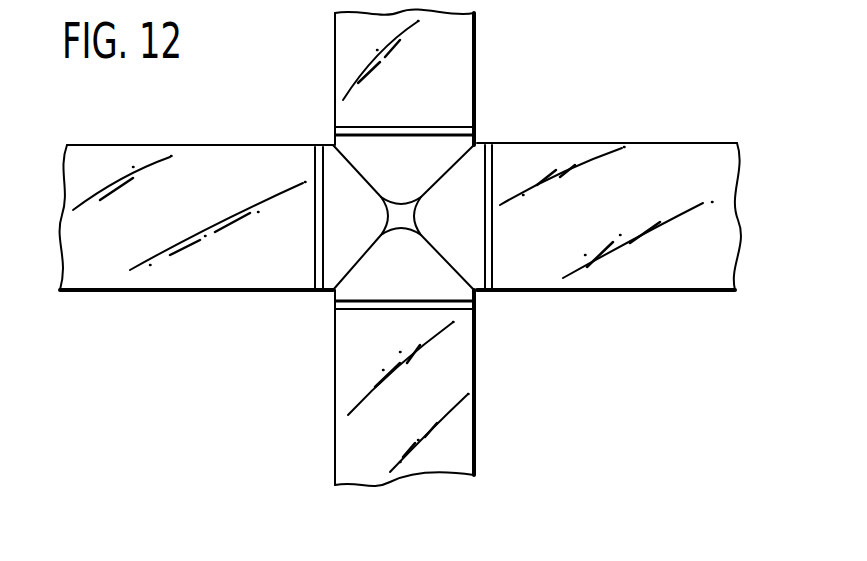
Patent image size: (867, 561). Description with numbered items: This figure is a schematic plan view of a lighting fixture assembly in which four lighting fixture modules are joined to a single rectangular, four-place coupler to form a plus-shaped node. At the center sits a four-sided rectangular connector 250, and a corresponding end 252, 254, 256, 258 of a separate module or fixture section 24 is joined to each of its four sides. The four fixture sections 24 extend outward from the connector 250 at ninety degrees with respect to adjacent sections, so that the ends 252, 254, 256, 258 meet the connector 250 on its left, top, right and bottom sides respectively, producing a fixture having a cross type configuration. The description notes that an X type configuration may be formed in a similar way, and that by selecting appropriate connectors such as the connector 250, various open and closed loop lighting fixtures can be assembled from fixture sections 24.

The fixture section 24 is at (130, 250).
The four-sided rectangular connector 250 is at (375, 270).
The end 252 is at (312, 172).
The end 254 is at (433, 128).
The end 256 is at (490, 182).
The end 258 is at (417, 312).